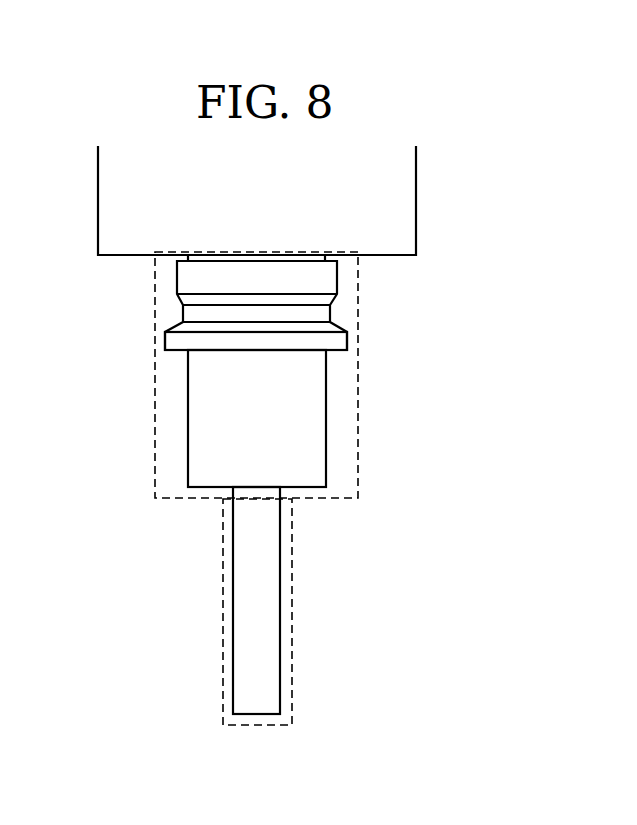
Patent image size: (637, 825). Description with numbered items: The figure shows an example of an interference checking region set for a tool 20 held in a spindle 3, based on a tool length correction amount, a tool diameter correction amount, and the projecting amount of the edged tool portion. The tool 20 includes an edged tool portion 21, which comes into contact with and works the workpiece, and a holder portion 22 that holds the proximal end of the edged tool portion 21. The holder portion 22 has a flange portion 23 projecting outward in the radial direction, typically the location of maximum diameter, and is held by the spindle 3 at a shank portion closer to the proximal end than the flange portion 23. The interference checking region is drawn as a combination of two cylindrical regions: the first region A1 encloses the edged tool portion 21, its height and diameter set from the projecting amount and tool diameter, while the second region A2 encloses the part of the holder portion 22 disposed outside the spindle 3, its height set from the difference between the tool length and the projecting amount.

The spindle 3 is at (416, 193).
The tool 20 is at (278, 484).
The edged tool portion 21 is at (280, 598).
The holder portion 22 is at (346, 434).
The flange portion 23 is at (347, 343).
The first region A1 is at (292, 677).
The second region A2 is at (358, 397).